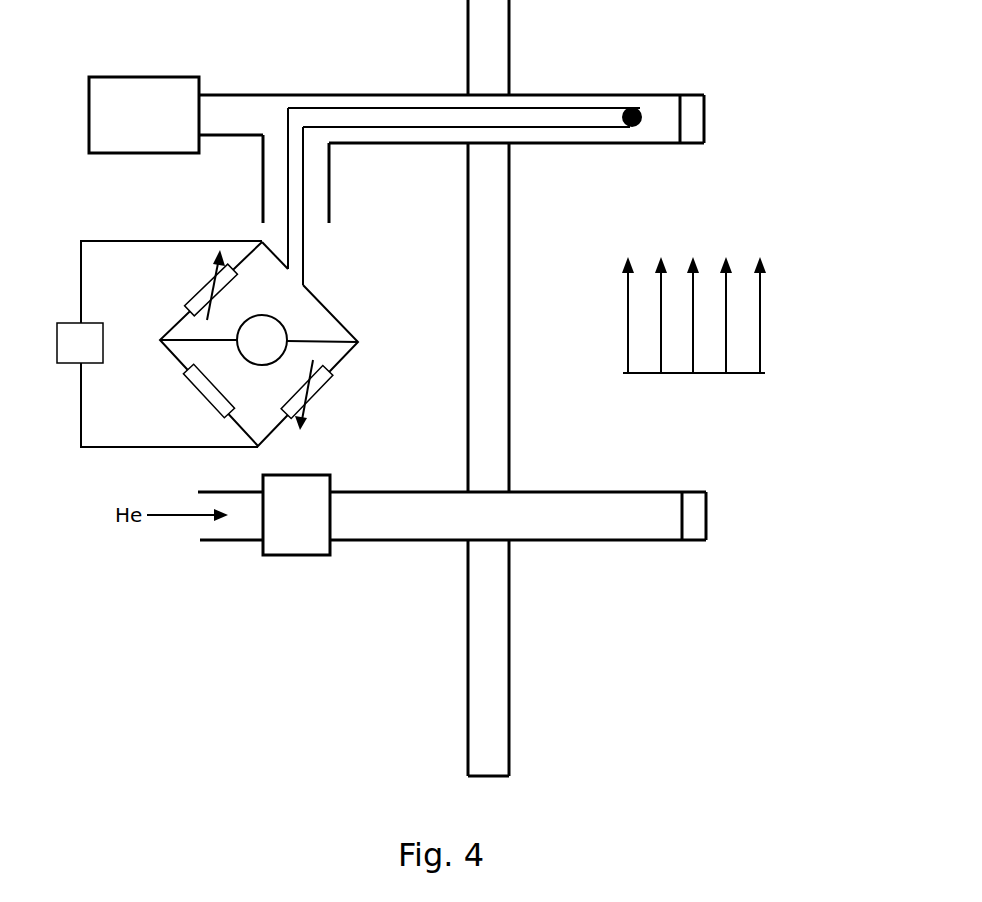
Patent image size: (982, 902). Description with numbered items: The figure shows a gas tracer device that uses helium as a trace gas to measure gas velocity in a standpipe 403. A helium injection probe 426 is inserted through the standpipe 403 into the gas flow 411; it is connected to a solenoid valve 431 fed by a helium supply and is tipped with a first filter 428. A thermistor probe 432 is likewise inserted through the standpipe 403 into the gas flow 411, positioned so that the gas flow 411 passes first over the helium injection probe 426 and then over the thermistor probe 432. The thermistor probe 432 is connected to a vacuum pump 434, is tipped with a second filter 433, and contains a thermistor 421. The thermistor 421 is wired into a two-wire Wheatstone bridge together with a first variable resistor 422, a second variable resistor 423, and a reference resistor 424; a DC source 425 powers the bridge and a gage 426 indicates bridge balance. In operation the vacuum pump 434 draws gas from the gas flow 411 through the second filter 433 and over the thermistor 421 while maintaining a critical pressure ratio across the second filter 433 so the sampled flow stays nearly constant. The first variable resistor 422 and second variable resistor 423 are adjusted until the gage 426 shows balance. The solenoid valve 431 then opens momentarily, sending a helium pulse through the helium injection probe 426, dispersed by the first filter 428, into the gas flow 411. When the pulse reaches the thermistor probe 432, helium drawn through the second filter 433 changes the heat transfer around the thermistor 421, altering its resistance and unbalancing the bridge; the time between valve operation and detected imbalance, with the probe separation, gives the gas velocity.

The standpipe 403 is at (488, 690).
The gas flow 411 is at (707, 373).
The thermistor 421 is at (635, 113).
The first variable resistor 422 is at (193, 298).
The second variable resistor 423 is at (317, 387).
The reference resistor 424 is at (200, 393).
The DC source 425 is at (68, 347).
The helium injection probe 426 is at (618, 595).
The first filter 428 is at (697, 522).
The solenoid valve 431 is at (300, 540).
The thermistor probe 432 is at (543, 103).
The second filter 433 is at (693, 120).
The vacuum pump 434 is at (122, 97).